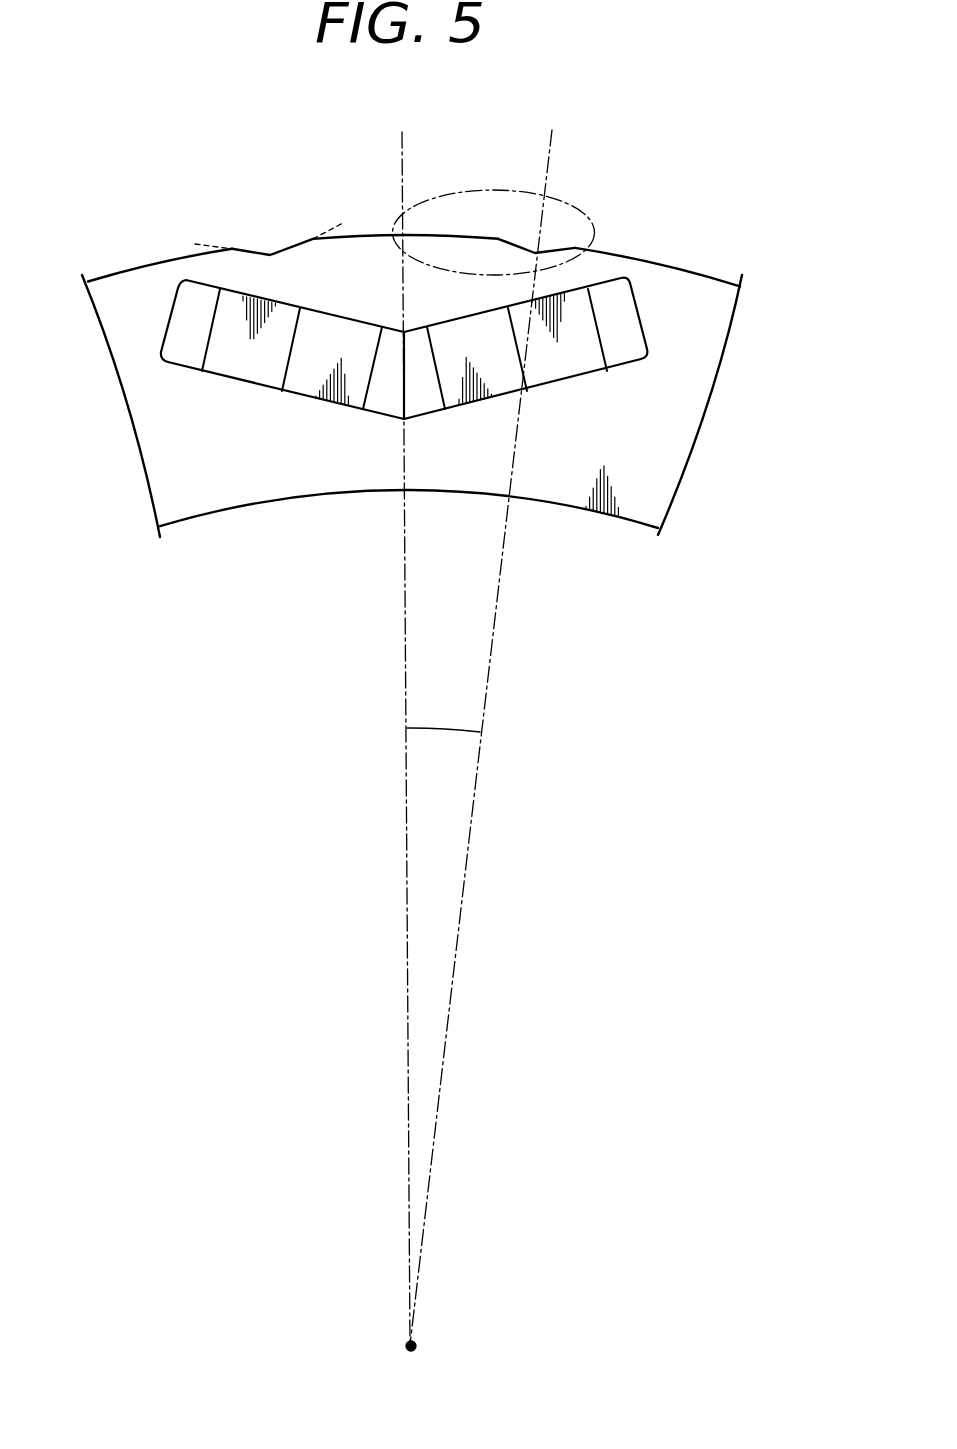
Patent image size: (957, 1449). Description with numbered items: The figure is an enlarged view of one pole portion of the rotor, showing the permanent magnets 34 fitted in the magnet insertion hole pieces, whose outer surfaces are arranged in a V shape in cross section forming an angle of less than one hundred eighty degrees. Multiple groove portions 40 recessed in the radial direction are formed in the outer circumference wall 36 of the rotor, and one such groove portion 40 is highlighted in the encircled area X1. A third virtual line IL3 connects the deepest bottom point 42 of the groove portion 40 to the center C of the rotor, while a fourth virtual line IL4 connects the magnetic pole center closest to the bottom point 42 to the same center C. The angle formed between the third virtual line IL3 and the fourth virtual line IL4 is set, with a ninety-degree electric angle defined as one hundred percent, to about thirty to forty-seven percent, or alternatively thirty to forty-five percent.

The permanent magnet 34 is at (207, 338).
The outer circumference wall 36 is at (702, 274).
The groove portion 40 is at (278, 212).
The bottom point 42 is at (271, 255).
The area X1 is at (595, 227).
The third virtual line IL3 is at (460, 918).
The fourth virtual line IL4 is at (406, 838).
The center of the rotor C is at (405, 1344).